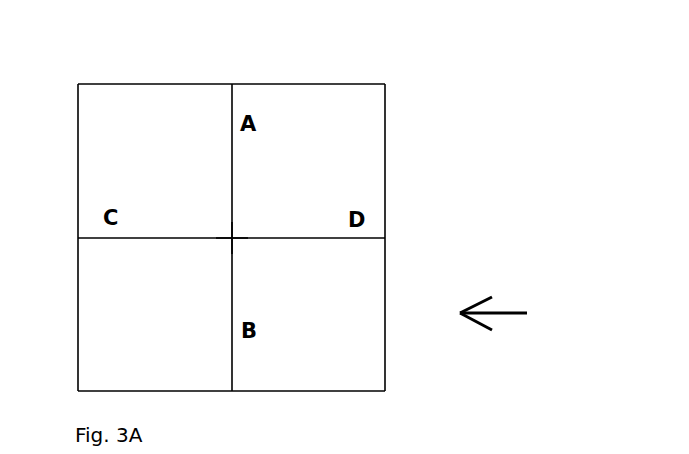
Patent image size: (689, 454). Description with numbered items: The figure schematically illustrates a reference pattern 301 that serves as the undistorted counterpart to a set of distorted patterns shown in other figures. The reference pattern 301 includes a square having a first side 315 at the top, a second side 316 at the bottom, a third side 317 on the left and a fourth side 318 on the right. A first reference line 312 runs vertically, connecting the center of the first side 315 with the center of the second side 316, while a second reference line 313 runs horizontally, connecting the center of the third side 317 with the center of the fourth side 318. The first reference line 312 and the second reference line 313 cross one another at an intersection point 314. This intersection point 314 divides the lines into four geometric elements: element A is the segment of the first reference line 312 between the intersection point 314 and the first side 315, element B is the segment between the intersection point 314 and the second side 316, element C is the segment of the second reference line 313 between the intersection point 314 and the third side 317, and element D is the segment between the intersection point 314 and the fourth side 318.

The reference pattern 301 is at (516, 313).
The first reference line 312 is at (232, 167).
The second reference line 313 is at (327, 238).
The intersection point 314 is at (232, 238).
The first side 315 is at (256, 84).
The second side 316 is at (310, 391).
The third side 317 is at (78, 158).
The fourth side 318 is at (385, 178).